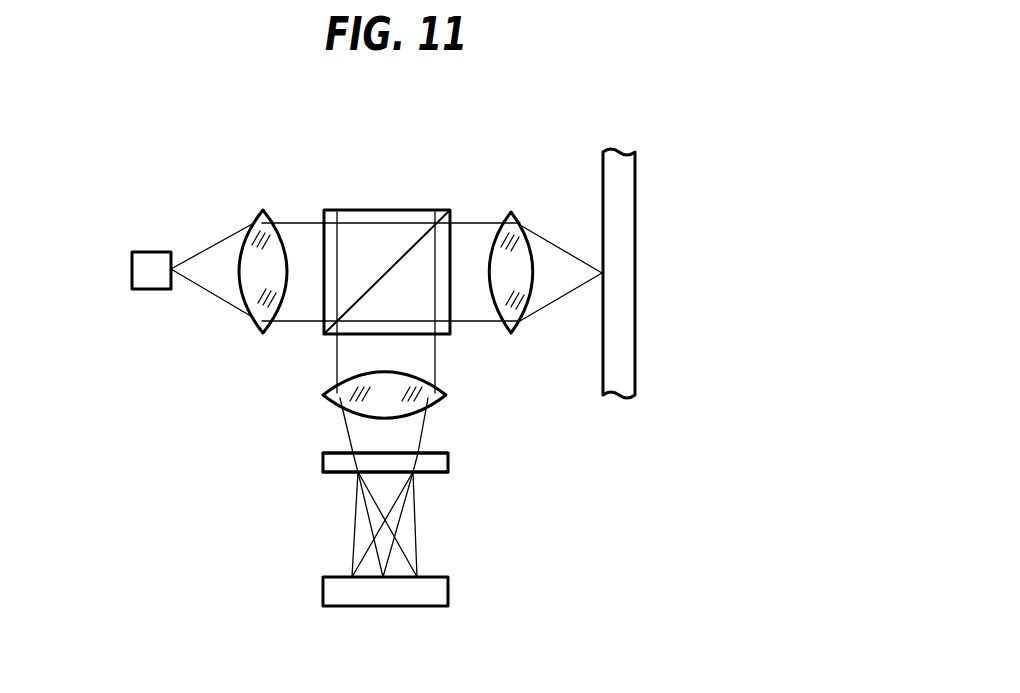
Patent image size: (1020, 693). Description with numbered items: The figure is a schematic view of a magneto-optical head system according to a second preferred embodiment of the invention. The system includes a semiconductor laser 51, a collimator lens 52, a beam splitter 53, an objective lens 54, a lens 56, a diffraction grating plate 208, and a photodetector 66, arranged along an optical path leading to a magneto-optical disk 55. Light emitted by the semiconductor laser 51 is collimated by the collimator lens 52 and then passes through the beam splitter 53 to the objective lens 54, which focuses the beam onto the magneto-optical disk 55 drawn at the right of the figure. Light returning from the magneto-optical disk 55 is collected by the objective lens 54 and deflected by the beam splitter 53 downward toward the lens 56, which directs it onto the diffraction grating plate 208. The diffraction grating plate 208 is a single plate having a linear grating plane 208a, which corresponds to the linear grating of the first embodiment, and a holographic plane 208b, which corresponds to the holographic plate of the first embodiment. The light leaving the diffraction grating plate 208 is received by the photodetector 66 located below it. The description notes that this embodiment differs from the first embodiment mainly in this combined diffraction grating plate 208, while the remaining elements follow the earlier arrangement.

The semiconductor laser 51 is at (147, 272).
The collimator lens 52 is at (258, 223).
The beam splitter 53 is at (378, 220).
The objective lens 54 is at (507, 221).
The magneto-optical disk 55 is at (628, 185).
The lens 56 is at (444, 395).
The diffraction grating plate 208 is at (466, 461).
The linear grating plane 208a is at (326, 451).
The holographic plane 208b is at (437, 473).
The photodetector 66 is at (440, 587).